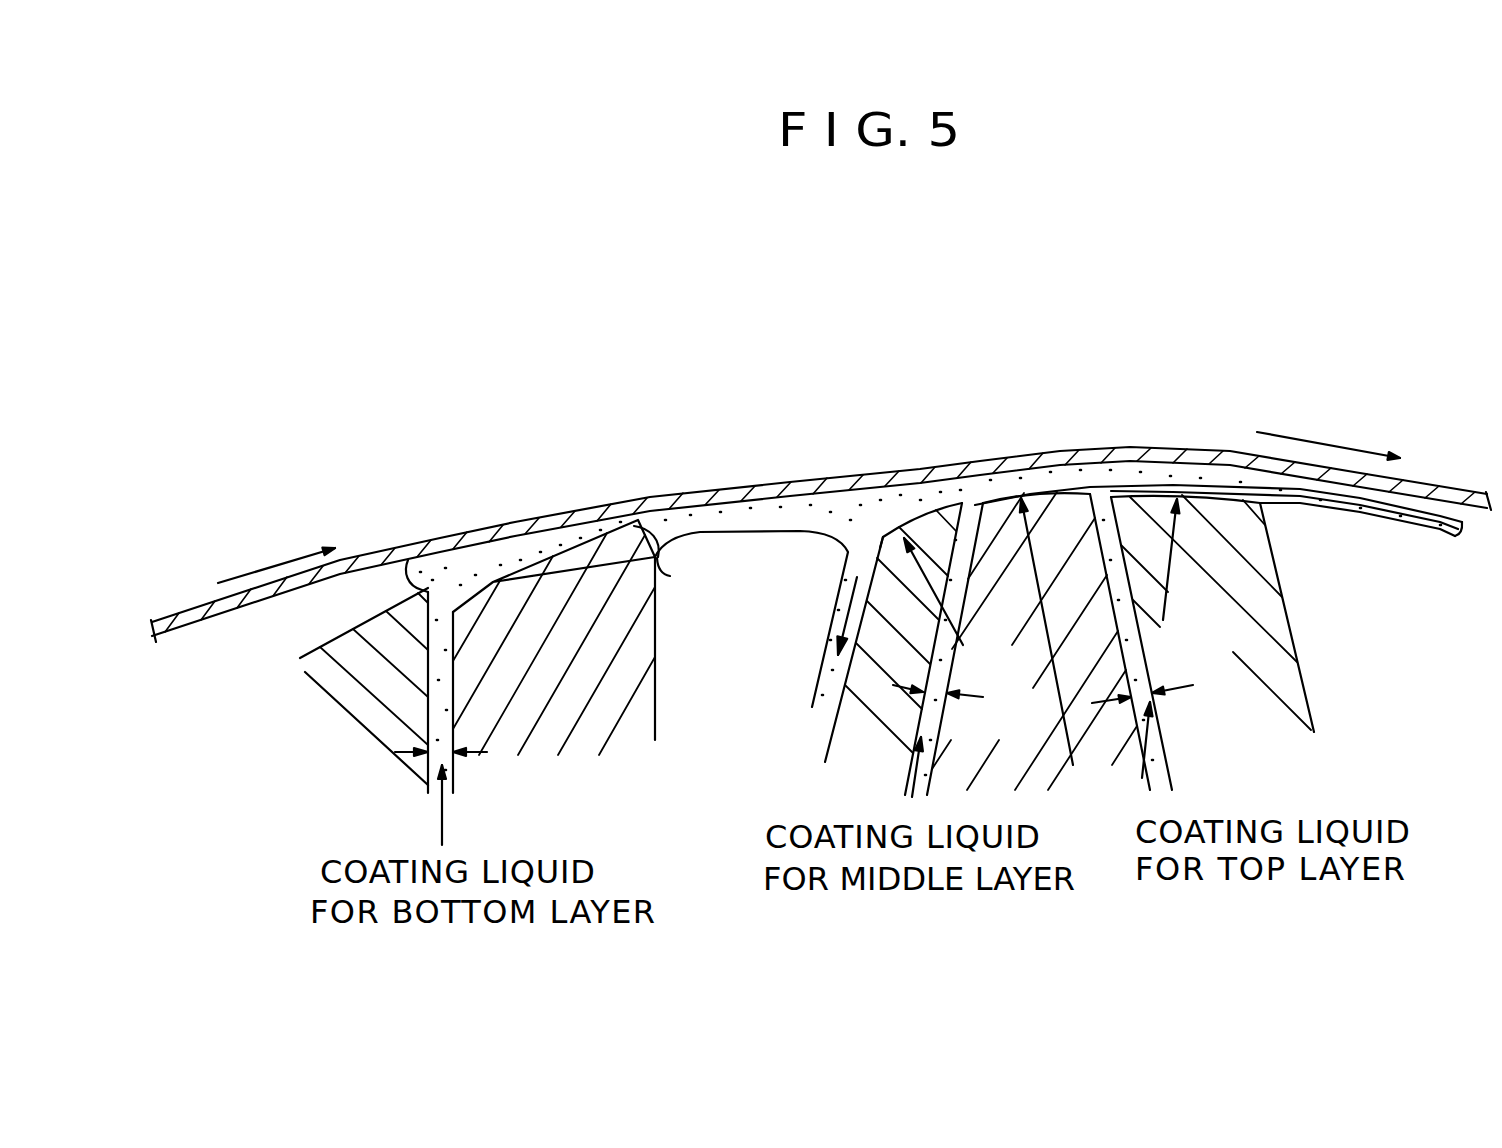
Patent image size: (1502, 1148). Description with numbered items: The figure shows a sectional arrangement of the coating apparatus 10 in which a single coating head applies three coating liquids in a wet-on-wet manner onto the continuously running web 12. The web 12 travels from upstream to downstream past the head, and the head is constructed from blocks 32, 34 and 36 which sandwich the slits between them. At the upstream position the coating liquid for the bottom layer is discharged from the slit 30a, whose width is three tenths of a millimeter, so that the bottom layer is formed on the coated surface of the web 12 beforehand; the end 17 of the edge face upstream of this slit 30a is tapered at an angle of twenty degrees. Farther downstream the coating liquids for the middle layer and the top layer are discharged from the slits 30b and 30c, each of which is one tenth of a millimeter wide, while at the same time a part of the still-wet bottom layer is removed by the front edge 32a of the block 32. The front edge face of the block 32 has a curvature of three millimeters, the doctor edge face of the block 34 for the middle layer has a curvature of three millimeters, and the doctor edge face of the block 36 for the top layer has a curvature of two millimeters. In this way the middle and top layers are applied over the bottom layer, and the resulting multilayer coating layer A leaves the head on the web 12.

The coating apparatus 10 is at (793, 550).
The web 12 is at (400, 544).
The end of the edge face 17 is at (491, 592).
The slit for the coating liquid for the bottom layer 30a is at (437, 668).
The slit for the coating liquid for the middle layer 30b is at (981, 498).
The slit for the coating liquid for the top layer 30c is at (1117, 500).
The block 32 is at (931, 512).
The front edge 32a is at (880, 534).
The block 34 is at (1053, 498).
The block 36 is at (1213, 497).
The coating layer A is at (1412, 541).